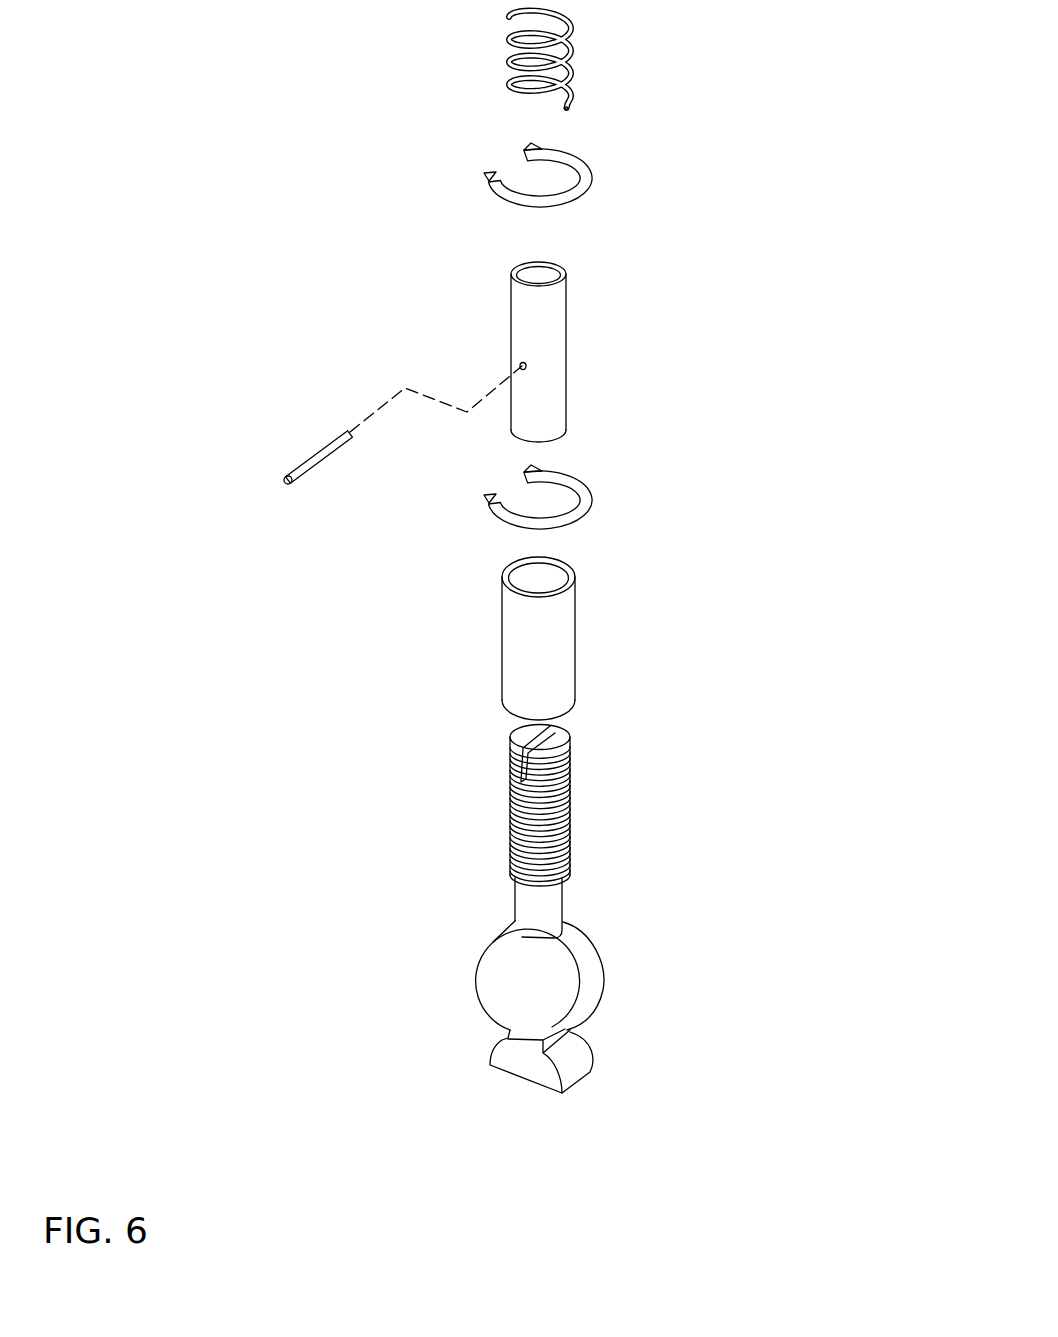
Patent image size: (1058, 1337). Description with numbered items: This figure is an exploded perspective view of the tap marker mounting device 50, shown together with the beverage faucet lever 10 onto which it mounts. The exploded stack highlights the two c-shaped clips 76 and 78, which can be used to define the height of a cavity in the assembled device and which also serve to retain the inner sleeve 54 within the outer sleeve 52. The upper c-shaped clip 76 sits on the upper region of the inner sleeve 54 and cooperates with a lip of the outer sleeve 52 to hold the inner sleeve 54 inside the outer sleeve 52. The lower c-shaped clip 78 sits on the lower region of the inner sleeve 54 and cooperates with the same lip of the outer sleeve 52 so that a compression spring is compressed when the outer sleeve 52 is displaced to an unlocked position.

The beverage faucet lever 10 is at (598, 795).
The tap marker mounting device 50 is at (753, 605).
The outer sleeve 52 is at (575, 665).
The inner sleeve 54 is at (510, 323).
The c-shaped clip 76 is at (628, 170).
The c-shaped clip 78 is at (628, 496).